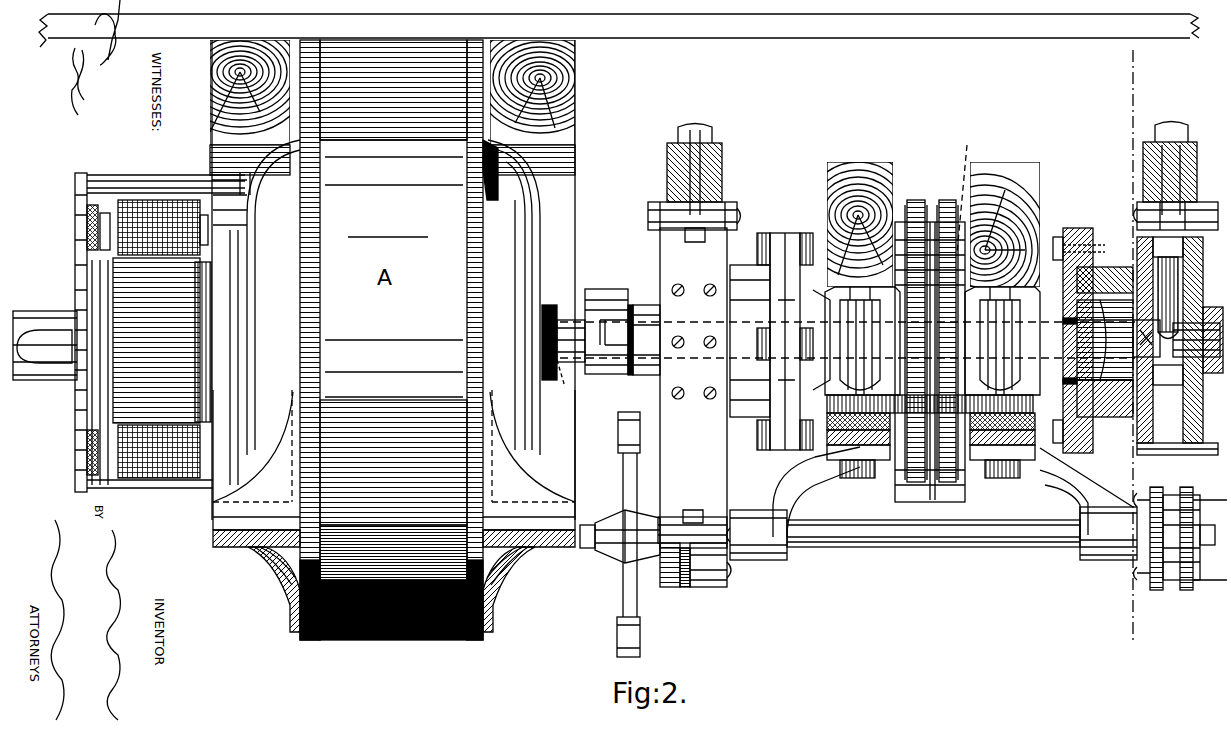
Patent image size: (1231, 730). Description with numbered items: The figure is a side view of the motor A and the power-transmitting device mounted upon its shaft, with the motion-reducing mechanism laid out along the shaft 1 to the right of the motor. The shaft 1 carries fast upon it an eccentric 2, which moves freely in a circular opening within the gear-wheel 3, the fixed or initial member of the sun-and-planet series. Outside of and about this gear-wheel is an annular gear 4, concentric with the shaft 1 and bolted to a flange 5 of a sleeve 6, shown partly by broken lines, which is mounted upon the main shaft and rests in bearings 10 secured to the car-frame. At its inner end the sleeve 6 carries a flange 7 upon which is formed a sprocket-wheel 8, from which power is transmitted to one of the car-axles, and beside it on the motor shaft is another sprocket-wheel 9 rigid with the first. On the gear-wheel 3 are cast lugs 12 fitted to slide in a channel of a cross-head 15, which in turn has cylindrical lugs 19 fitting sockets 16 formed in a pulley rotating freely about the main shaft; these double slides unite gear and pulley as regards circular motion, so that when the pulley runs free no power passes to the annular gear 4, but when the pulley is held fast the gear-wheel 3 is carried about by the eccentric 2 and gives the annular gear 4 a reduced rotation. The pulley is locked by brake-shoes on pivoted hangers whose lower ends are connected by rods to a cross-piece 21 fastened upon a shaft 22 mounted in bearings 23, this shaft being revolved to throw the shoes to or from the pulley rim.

The shaft 1 is at (886, 364).
The eccentric 2 is at (1098, 342).
The gear-wheel 3 is at (1105, 410).
The annular gear 4 is at (1105, 268).
The flange 5 is at (1070, 230).
The sleeve 6 is at (1043, 385).
The flange 7 is at (968, 190).
The sprocket-wheel 8 is at (948, 200).
The sprocket-wheel 9 is at (915, 200).
The bearings 10 is at (832, 296).
The lugs 12 is at (1195, 312).
The cross-head 15 is at (1195, 290).
The cylindrical sockets 16 is at (1195, 265).
The cylindrical lugs 19 is at (1195, 247).
The cross-piece 21 is at (708, 588).
The shaft 22 is at (950, 540).
The bearings 23 is at (777, 553).